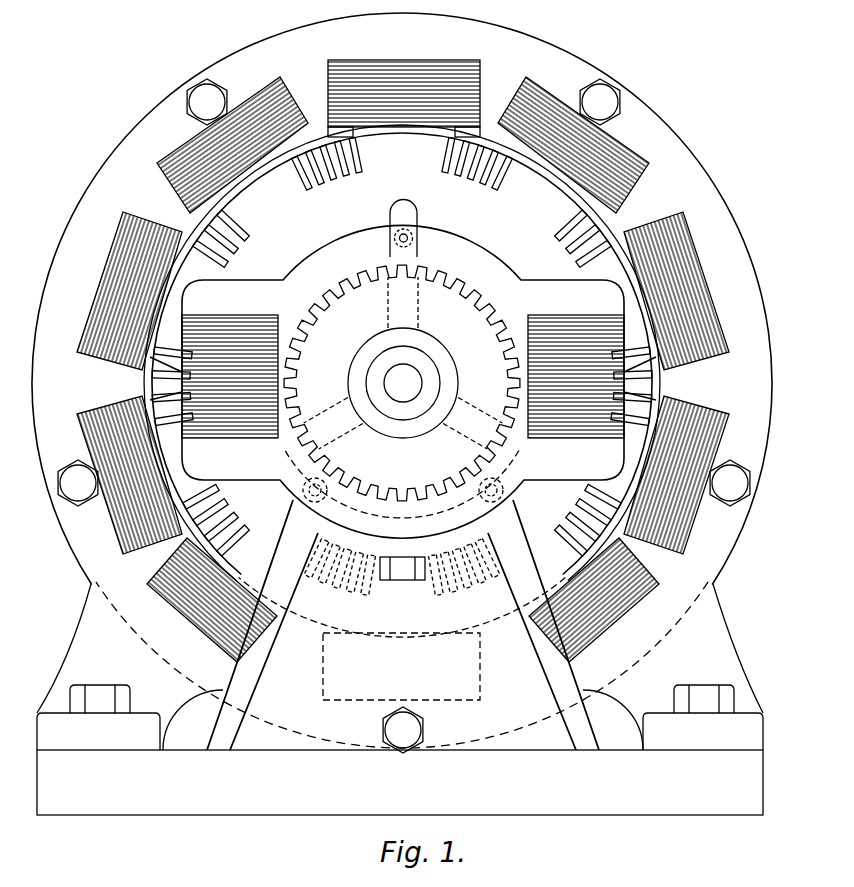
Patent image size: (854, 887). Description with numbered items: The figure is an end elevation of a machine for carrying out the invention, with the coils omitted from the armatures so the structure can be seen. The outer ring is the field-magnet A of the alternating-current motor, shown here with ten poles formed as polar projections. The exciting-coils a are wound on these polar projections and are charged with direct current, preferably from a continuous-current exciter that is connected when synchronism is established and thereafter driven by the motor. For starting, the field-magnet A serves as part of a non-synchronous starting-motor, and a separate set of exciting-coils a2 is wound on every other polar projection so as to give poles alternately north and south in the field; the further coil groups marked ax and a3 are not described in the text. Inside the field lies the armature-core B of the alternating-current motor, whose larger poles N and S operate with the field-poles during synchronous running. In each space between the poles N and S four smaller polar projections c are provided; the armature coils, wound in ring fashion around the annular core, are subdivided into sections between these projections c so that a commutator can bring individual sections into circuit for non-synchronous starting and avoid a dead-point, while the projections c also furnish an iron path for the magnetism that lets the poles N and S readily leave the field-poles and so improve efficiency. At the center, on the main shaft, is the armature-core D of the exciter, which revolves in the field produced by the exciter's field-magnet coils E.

The field-magnet A is at (680, 167).
The armature-core B is at (403, 369).
The exciter armature-core D is at (402, 383).
The field-magnet coils E is at (578, 324).
The north armature pole N is at (402, 353).
The south armature pole S is at (325, 198).
The exciting-coils a is at (398, 263).
The field coil ax is at (399, 145).
The starting exciting-coils a2 is at (403, 383).
The field coil a3 is at (403, 430).
The intermediate polar projections c is at (402, 163).